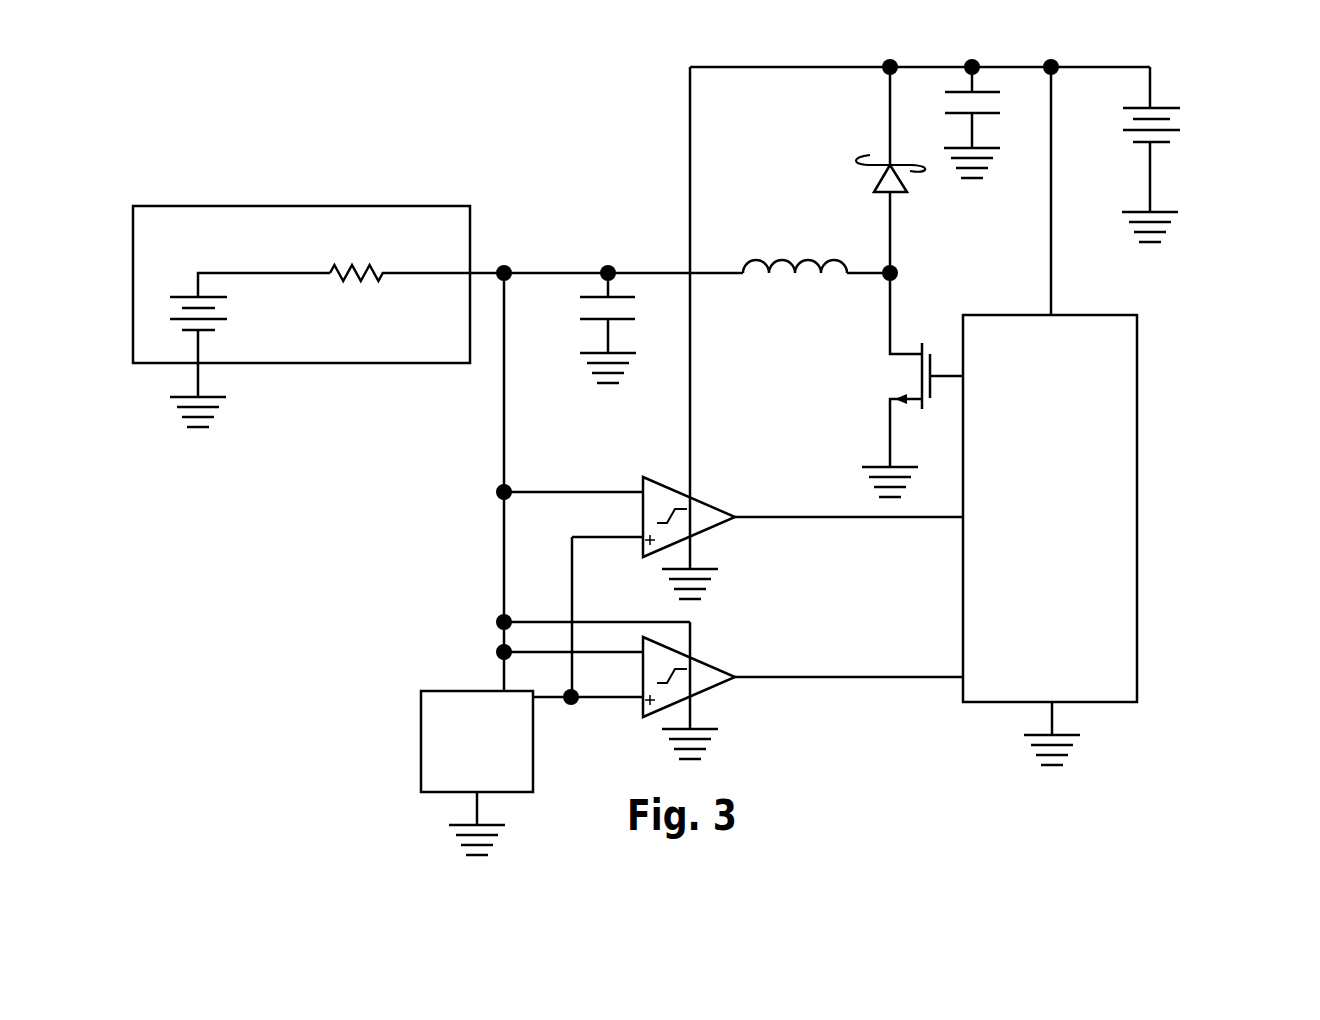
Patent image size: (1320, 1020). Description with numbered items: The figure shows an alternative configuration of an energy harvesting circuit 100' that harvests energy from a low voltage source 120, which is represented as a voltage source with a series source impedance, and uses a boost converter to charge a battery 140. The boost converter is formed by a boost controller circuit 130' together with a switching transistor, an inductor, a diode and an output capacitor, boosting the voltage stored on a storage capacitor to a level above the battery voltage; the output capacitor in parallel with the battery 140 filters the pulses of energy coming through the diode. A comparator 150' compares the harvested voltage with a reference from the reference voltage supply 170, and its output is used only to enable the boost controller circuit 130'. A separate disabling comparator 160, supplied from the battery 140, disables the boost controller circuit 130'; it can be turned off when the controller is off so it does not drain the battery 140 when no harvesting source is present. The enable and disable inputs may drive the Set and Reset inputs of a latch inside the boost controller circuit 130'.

The energy harvesting circuit 100' is at (705, 438).
The low voltage source 120 is at (343, 206).
The boost controller circuit 130' is at (1050, 502).
The battery 140 is at (1185, 130).
The comparator 150' is at (707, 702).
The disabling comparator 160 is at (707, 497).
The reference voltage supply 170 is at (421, 707).